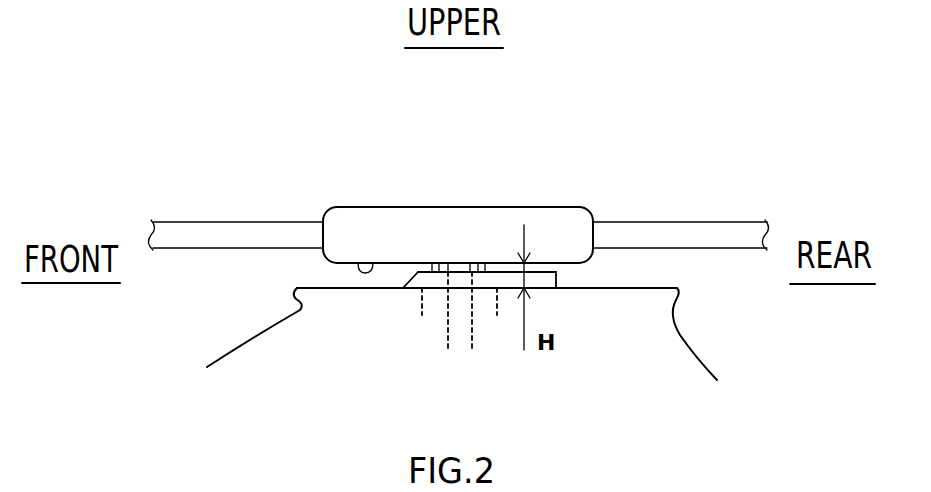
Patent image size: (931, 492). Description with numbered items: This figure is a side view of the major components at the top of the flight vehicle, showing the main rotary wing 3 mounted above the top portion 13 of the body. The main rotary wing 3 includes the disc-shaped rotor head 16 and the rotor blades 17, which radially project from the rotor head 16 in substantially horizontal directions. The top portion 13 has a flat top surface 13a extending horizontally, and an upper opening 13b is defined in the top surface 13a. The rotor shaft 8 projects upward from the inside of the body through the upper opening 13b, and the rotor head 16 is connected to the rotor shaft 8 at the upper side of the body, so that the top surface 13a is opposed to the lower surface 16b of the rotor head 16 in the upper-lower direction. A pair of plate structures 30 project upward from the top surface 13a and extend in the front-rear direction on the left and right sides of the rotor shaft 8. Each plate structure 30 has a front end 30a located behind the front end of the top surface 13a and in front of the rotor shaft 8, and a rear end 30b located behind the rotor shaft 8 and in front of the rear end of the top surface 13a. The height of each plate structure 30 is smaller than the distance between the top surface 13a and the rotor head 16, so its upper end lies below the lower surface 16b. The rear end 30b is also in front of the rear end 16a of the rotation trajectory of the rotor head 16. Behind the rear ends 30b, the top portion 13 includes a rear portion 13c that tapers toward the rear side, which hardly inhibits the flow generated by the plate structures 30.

The main rotary wing 3 is at (305, 114).
The rotor blades 17 is at (195, 221).
The rotor head 16 is at (353, 207).
The rear end of the rotation trajectory of the radially outer end of the rotor head 16a is at (597, 234).
The lower surface of the rotor head 16b is at (373, 262).
The top portion 13 is at (292, 333).
The top surface 13a is at (332, 290).
The upper opening 13b is at (424, 300).
The rear portion 13c is at (657, 303).
The plate structure 30 is at (503, 277).
The front end 30a is at (410, 280).
The rear end 30b is at (557, 277).
The rotor shaft 8 is at (448, 333).